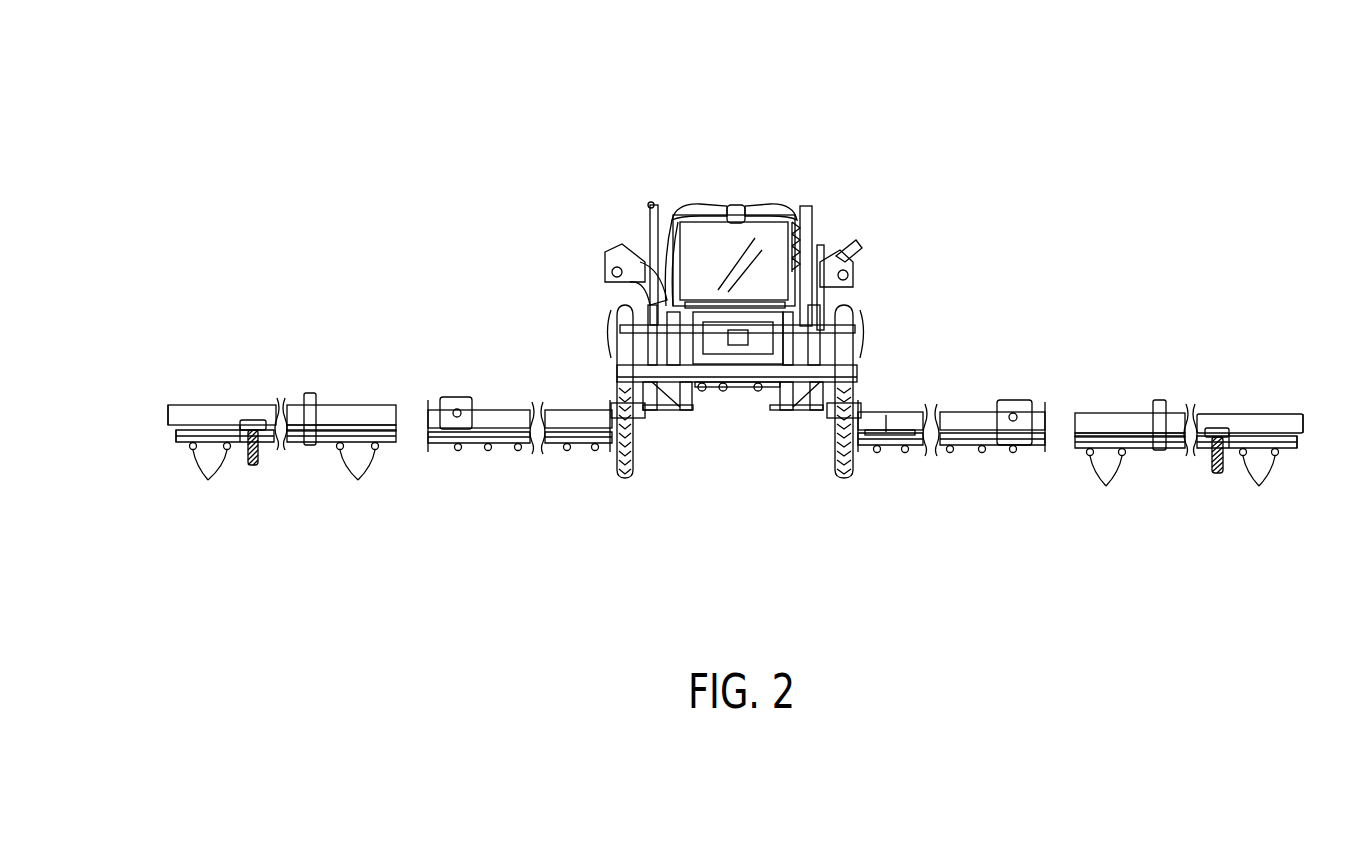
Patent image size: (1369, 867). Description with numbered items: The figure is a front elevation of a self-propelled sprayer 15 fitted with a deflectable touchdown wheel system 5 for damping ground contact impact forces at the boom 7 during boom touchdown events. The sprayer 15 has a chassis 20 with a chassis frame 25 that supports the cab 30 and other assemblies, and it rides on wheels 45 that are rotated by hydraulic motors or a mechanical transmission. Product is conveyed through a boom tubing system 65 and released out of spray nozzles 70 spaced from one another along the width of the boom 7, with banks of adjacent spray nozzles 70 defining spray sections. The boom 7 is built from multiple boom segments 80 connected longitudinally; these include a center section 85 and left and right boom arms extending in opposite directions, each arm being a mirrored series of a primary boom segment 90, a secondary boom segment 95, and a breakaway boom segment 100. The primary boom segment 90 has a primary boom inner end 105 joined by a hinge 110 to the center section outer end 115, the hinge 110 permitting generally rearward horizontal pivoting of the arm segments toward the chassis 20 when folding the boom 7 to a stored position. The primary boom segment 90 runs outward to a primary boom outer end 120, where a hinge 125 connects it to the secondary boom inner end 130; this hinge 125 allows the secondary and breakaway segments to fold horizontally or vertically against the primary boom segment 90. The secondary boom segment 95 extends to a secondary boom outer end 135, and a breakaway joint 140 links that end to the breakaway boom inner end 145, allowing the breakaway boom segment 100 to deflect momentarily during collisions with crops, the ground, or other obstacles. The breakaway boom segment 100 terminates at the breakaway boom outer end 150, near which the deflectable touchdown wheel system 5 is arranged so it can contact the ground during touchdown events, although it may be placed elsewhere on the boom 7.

The deflectable touchdown wheel system 5 is at (259, 532).
The boom 7 is at (904, 355).
The self-propelled sprayer 15 is at (713, 62).
The chassis 20 is at (782, 392).
The chassis frame 25 is at (762, 318).
The cab 30 is at (720, 193).
The wheels 45 is at (630, 478).
The boom tubing system 65 is at (917, 453).
The spray nozzles 70 is at (705, 390).
The boom segments 80 is at (212, 369).
The center section 85 is at (729, 410).
The primary boom segment 90 is at (570, 360).
The secondary boom segment 95 is at (357, 358).
The breakaway boom segment 100 is at (235, 384).
The primary boom inner end 105 is at (585, 440).
The hinge 110 is at (618, 448).
The center section outer end 115 is at (640, 420).
The primary boom outer end 120 is at (496, 408).
The hinge 125 is at (462, 422).
The secondary boom inner end 130 is at (445, 400).
The secondary boom outer end 135 is at (322, 407).
The breakaway joint 140 is at (306, 450).
The breakaway boom inner end 145 is at (312, 398).
The breakaway boom outer end 150 is at (180, 408).